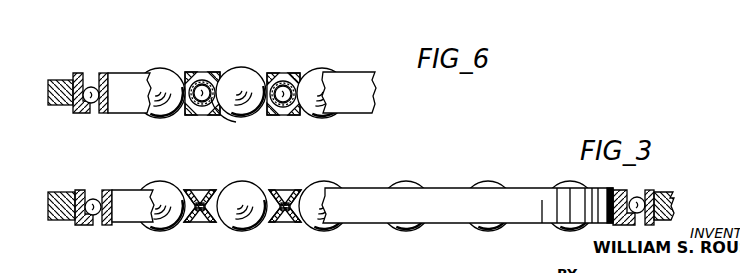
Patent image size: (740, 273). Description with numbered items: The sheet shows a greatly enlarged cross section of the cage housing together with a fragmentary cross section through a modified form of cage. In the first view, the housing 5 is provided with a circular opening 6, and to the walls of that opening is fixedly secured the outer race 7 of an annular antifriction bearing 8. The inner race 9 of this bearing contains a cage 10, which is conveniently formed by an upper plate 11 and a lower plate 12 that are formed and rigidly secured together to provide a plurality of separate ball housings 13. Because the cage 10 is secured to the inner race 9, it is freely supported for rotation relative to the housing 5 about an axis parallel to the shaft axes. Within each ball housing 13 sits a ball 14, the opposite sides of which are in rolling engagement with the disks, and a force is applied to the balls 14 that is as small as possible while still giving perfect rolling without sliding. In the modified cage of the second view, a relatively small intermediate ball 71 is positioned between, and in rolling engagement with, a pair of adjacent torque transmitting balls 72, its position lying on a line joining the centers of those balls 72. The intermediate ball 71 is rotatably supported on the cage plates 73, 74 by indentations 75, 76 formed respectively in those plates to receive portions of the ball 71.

In FIG. 3, the housing 5 is at (72, 187).
In FIG. 3, the circular opening 6 is at (80, 226).
In FIG. 3, the outer race 7 is at (93, 198).
In FIG. 3, the annular antifriction bearing 8 is at (104, 228).
In FIG. 3, the inner race 9 is at (124, 190).
In FIG. 3, the cage 10 is at (270, 233).
In FIG. 3, the upper plate 11 is at (204, 195).
In FIG. 3, the lower plate 12 is at (200, 218).
In FIG. 3, the ball housing 13 is at (268, 188).
In FIG. 3, the ball 14 is at (330, 188).
In FIG. 6, the intermediate ball 71 is at (222, 116).
In FIG. 6, the torque transmitting ball 72 is at (168, 72).
In FIG. 6, the cage plate 73 is at (201, 77).
In FIG. 6, the cage plate 74 is at (209, 113).
In FIG. 6, the indentation 75 is at (215, 96).
In FIG. 6, the indentation 76 is at (236, 118).